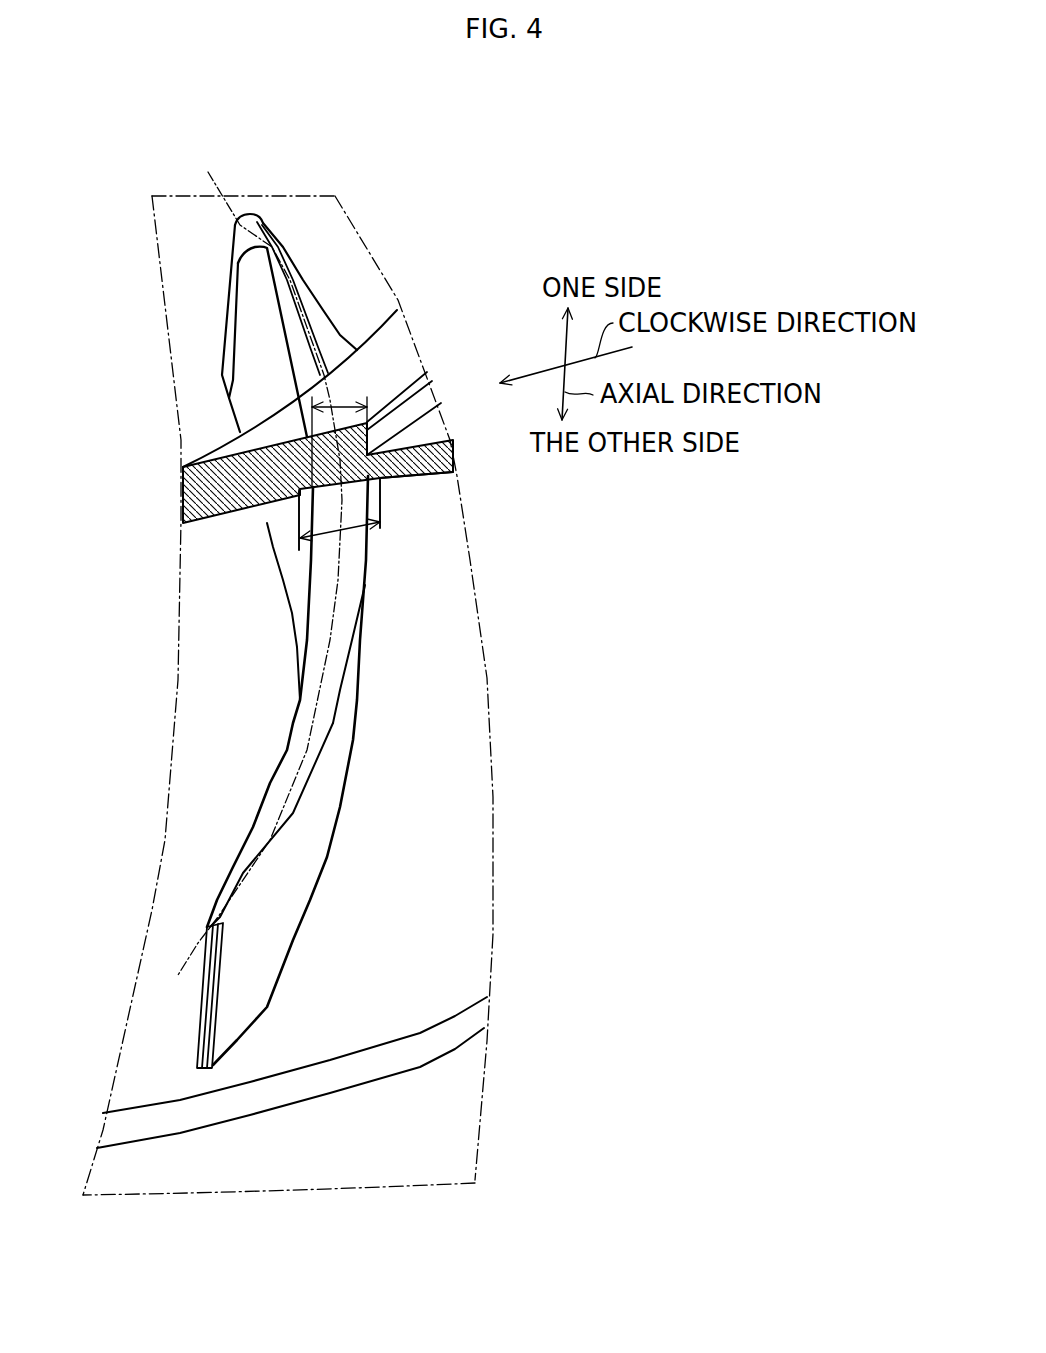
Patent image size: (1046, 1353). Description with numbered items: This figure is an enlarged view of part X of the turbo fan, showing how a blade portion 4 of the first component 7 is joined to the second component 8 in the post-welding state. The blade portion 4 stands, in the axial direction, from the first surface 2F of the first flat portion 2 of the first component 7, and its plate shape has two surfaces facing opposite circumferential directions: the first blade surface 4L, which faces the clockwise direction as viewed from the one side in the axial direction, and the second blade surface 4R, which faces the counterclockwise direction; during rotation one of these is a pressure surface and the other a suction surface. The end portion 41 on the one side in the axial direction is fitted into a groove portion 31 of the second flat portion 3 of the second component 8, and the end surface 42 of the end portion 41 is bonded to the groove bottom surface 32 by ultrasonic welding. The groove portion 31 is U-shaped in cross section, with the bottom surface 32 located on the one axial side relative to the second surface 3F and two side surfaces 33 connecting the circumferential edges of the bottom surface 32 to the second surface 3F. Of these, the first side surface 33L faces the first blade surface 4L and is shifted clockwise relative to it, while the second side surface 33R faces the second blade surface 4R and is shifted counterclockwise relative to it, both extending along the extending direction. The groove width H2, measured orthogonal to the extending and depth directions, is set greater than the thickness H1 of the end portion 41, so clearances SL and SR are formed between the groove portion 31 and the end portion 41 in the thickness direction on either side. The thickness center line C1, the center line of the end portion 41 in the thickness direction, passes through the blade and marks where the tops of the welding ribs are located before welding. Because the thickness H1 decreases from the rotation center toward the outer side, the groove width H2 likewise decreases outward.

The thickness center line C1 is at (328, 972).
The second component 8 is at (365, 256).
The second flat portion 3 is at (345, 463).
The groove portion 31 is at (252, 452).
The first blade surface 4L is at (275, 398).
The thickness H1 is at (341, 430).
The bottom surface 32 is at (330, 501).
The side surfaces 33 is at (330, 530).
The first side surface 33L is at (302, 497).
The second side surface 33R is at (381, 480).
The clearance SL is at (307, 508).
The clearance SR is at (373, 495).
The second surface 3F is at (440, 475).
The groove width H2 is at (352, 547).
The end surface 42 is at (330, 687).
The end portion 41 is at (296, 820).
The first surface 2F is at (429, 889).
The second blade surface 4R is at (275, 946).
The blade portion 4 is at (290, 608).
The first flat portion 2 is at (405, 1070).
The first component 7 is at (122, 1153).
The part X is at (270, 1192).